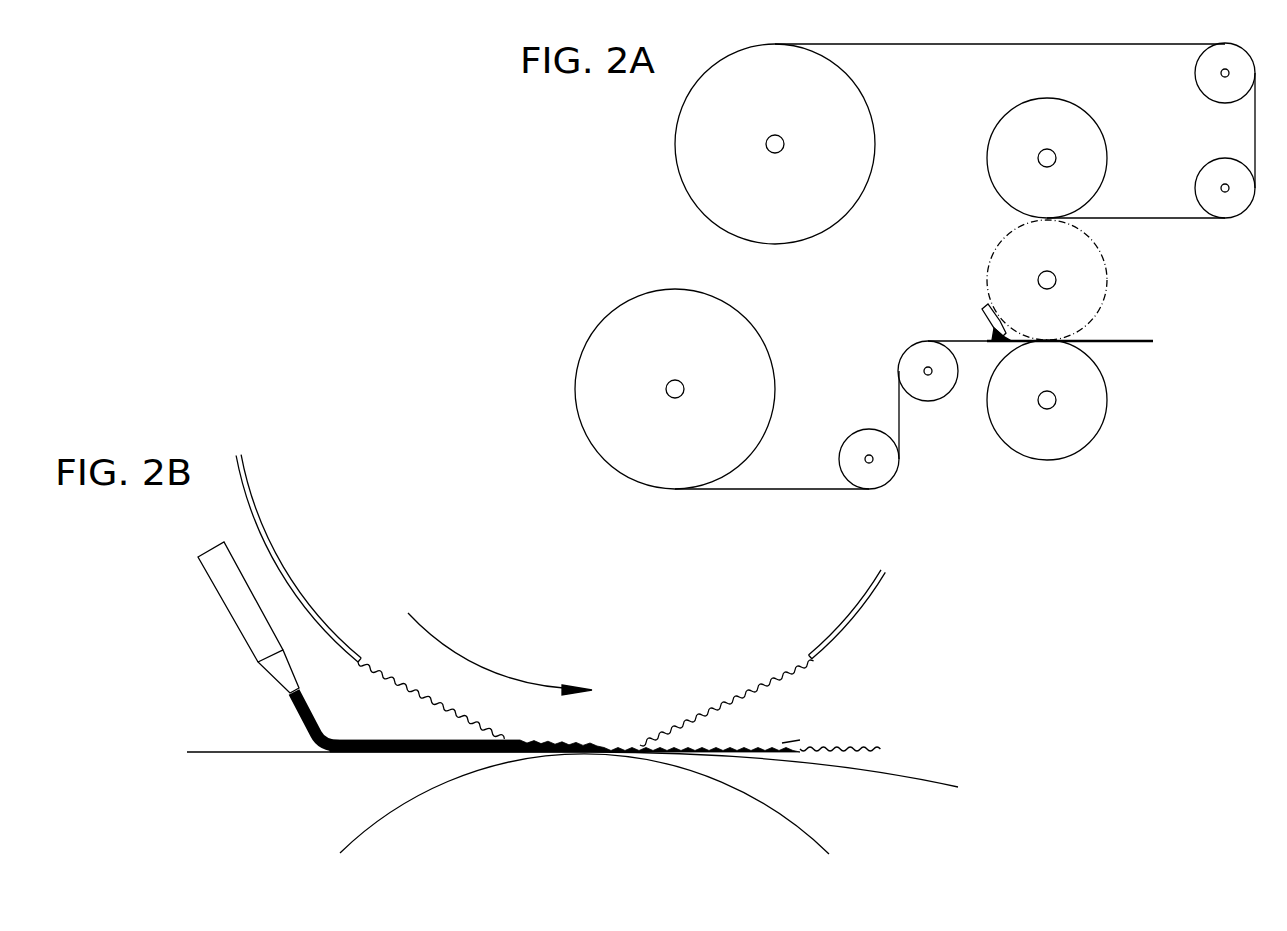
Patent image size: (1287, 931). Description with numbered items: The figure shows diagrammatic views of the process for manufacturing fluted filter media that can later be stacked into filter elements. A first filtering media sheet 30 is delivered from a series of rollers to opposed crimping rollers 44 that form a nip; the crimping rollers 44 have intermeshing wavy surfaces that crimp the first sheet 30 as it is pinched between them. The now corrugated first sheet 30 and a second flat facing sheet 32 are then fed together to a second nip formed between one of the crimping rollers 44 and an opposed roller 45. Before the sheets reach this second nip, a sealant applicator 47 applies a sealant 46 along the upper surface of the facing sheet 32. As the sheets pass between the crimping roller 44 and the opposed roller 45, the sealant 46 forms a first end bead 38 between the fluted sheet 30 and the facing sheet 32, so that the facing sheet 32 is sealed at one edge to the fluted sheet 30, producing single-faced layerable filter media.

In FIG. 2A, the first filtering media sheet 30 is at (1010, 46).
In FIG. 2B, the first filtering media sheet 30 is at (870, 745).
In FIG. 2A, the facing sheet 32 is at (805, 490).
In FIG. 2B, the facing sheet 32 is at (252, 752).
In FIG. 2B, the first end bead 38 is at (797, 745).
In FIG. 2A, the crimping rollers 44 is at (1095, 145).
In FIG. 2B, the crimping rollers 44 is at (410, 697).
In FIG. 2A, the opposed roller 45 is at (1085, 432).
In FIG. 2B, the opposed roller 45 is at (718, 823).
In FIG. 2B, the sealant 46 is at (318, 727).
In FIG. 2A, the sealant applicator 47 is at (980, 316).
In FIG. 2B, the sealant applicator 47 is at (250, 628).